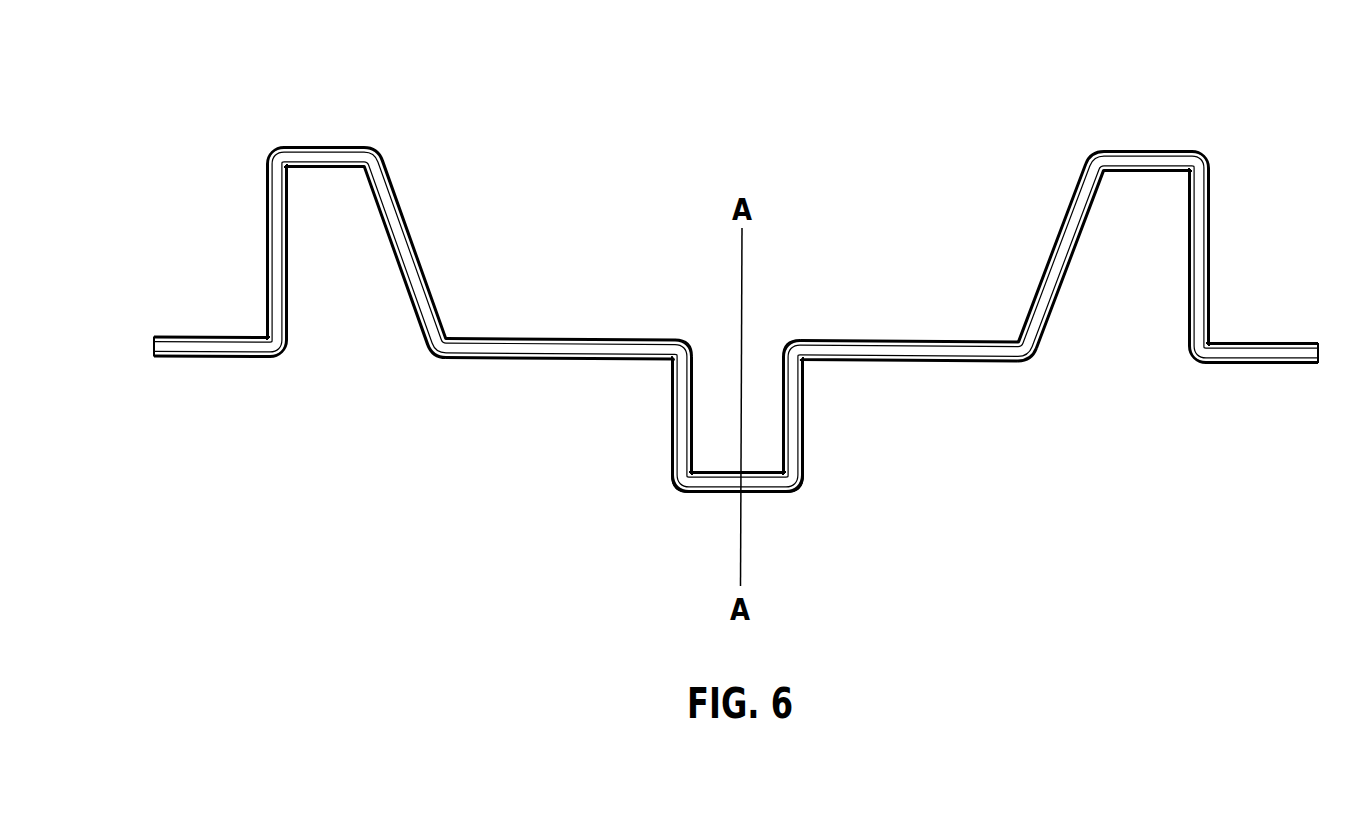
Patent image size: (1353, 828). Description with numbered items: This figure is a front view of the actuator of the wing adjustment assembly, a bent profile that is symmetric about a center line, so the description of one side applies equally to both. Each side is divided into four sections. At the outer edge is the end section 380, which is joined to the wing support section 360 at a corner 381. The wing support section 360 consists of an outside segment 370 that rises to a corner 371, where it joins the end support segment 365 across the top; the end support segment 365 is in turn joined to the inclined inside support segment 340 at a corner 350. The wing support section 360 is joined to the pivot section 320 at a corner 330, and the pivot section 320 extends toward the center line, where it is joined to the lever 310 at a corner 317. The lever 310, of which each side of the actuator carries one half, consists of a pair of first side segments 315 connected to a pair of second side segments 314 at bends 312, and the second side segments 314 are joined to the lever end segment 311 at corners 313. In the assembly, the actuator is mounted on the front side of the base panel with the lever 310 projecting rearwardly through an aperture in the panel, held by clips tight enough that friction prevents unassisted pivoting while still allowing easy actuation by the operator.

The lever 310 is at (781, 503).
The lever end segment 311 is at (703, 492).
The bend 312 is at (681, 418).
The corner 313 is at (671, 486).
The second side segment 314 is at (676, 452).
The first side segment 315 is at (673, 392).
The corner 317 is at (685, 333).
The pivot section 320 is at (576, 337).
The corner 330 is at (440, 350).
The inside support segment 340 is at (420, 245).
The corner 350 is at (380, 155).
The wing support section 360 is at (343, 141).
The end support segment 365 is at (332, 167).
The outside segment 370 is at (270, 243).
The corner 371 is at (280, 152).
The end section 380 is at (211, 364).
The corner 381 is at (282, 357).